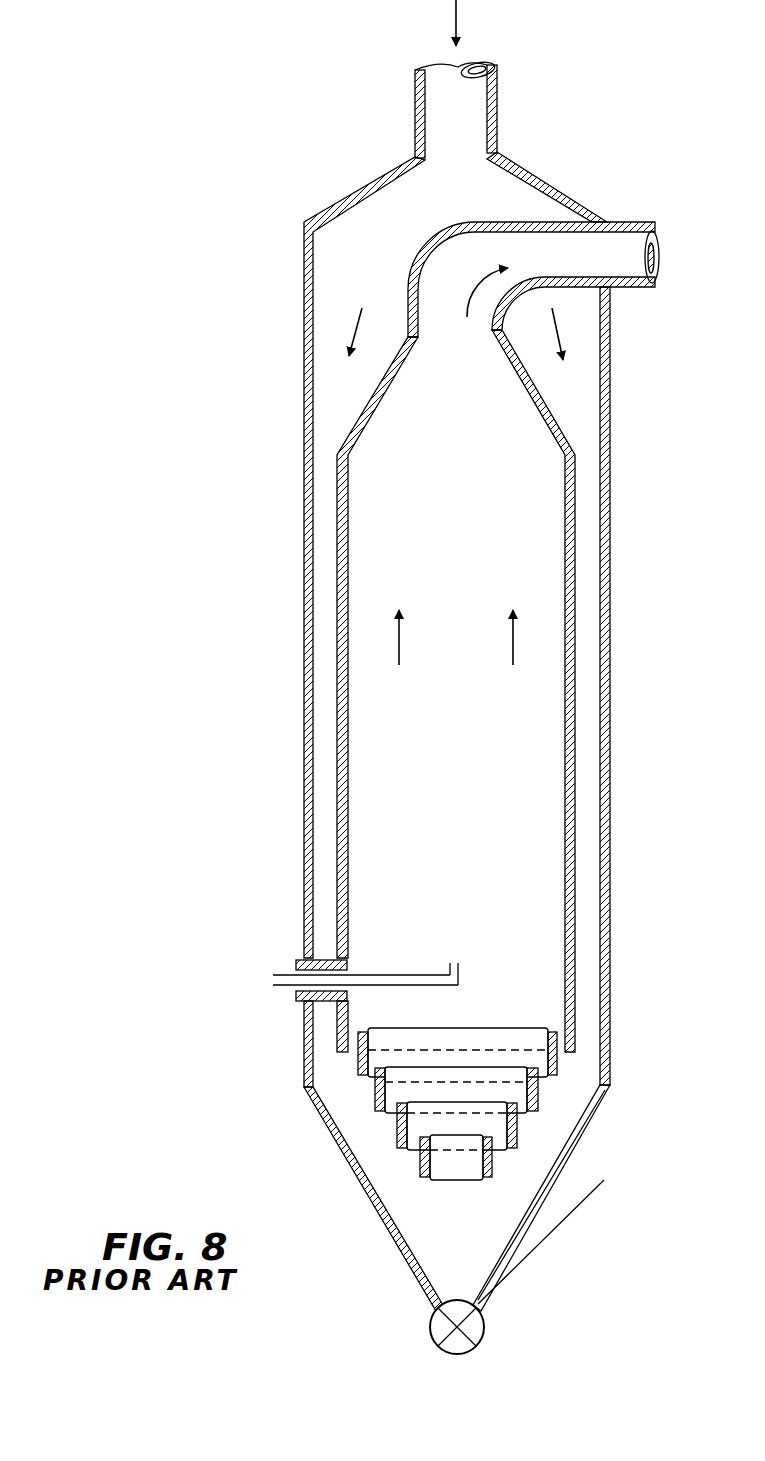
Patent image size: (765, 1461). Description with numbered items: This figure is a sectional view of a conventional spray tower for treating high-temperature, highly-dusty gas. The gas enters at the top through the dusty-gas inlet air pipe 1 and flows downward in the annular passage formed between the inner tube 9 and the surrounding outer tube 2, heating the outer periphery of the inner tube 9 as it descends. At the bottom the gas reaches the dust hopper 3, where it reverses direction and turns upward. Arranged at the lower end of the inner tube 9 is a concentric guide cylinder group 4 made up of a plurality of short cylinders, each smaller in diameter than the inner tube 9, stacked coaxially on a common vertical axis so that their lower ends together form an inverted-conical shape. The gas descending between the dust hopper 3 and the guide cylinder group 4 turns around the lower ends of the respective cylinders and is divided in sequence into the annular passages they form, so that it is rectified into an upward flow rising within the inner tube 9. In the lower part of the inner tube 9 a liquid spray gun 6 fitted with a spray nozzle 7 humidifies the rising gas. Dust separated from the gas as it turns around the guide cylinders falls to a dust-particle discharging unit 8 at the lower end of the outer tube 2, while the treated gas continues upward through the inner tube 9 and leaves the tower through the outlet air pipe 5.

The dusty-gas inlet air pipe 1 is at (480, 108).
The outer tube 2 is at (610, 555).
The dust hopper 3 is at (553, 1188).
The concentric guide cylinder group 4 is at (538, 1093).
The outlet air pipe 5 is at (633, 222).
The liquid spray gun 6 is at (283, 988).
The spray nozzle 7 is at (460, 967).
The dust-particle discharging unit 8 is at (484, 1330).
The inner tube 9 is at (337, 757).